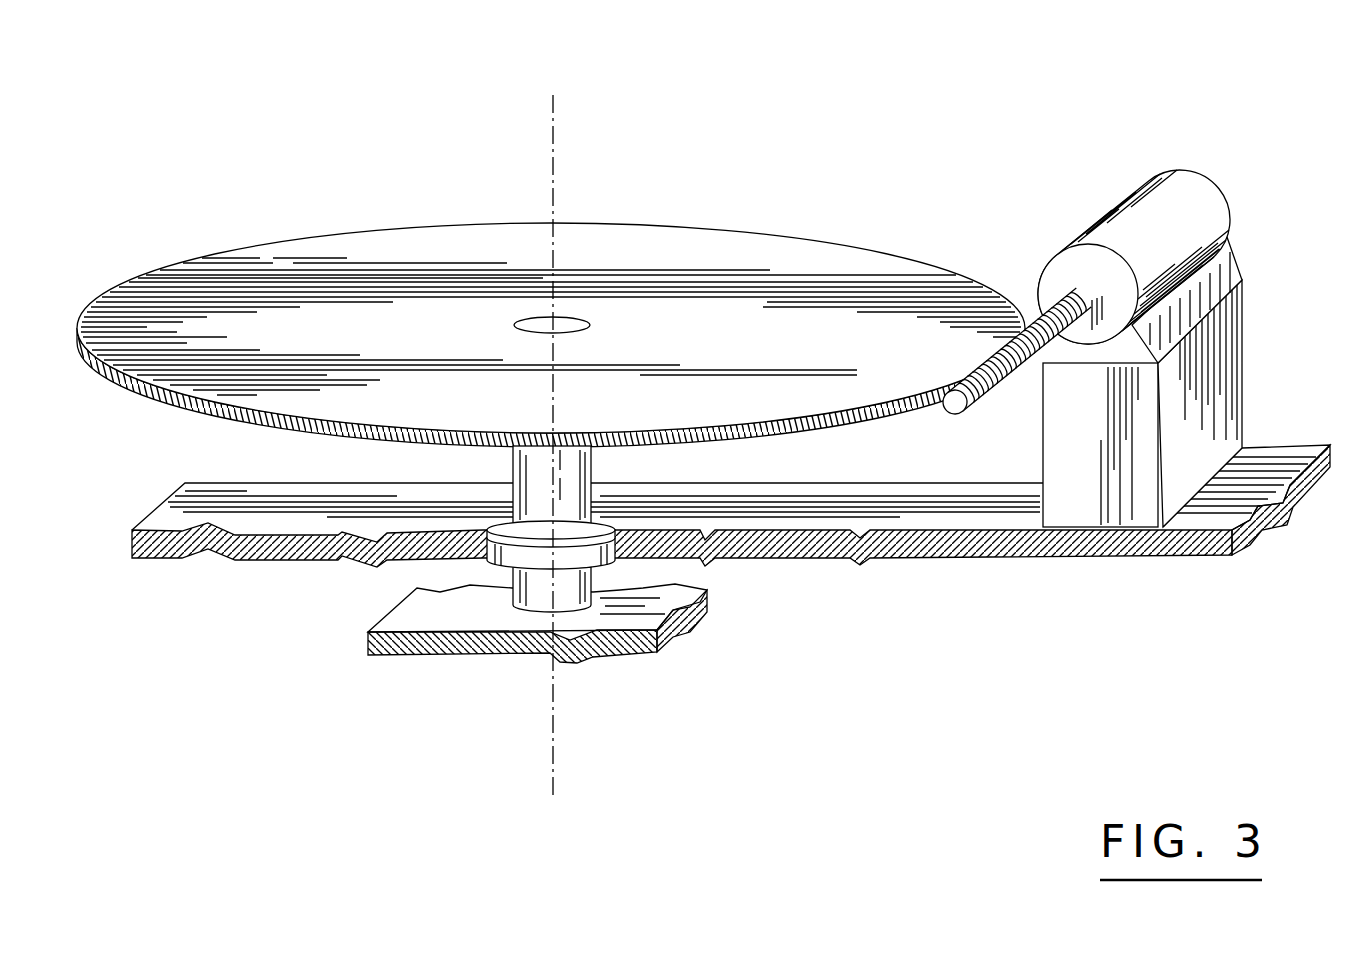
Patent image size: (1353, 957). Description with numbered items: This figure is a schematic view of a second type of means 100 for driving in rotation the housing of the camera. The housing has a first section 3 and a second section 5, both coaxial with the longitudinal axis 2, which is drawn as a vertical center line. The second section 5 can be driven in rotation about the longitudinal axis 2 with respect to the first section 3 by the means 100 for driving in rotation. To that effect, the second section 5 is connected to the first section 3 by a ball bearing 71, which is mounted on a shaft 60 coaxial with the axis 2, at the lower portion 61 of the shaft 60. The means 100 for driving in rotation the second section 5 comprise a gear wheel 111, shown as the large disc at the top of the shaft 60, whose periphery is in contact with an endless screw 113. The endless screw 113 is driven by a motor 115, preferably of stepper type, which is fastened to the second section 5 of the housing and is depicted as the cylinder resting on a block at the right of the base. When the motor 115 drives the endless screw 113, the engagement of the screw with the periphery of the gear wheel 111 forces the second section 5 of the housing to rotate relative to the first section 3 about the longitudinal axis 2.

The longitudinal axis 2 is at (548, 112).
The first section 3 is at (403, 619).
The second section 5 is at (918, 533).
The shaft 60 is at (506, 529).
The lower portion of the shaft 61 is at (592, 490).
The ball bearing 71 is at (618, 561).
The means for driving in rotation 100 is at (1125, 299).
The gear wheel 111 is at (673, 224).
The endless screw 113 is at (1010, 374).
The motor 115 is at (1228, 215).